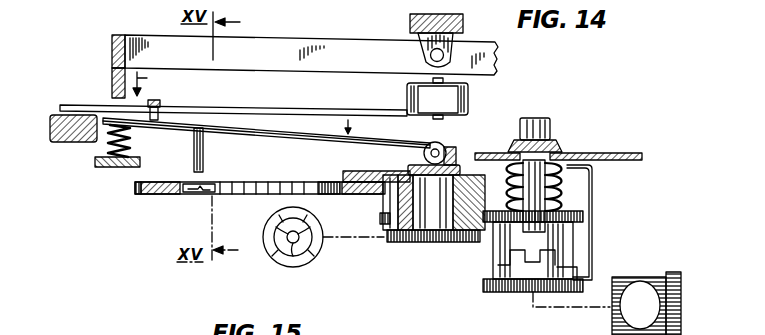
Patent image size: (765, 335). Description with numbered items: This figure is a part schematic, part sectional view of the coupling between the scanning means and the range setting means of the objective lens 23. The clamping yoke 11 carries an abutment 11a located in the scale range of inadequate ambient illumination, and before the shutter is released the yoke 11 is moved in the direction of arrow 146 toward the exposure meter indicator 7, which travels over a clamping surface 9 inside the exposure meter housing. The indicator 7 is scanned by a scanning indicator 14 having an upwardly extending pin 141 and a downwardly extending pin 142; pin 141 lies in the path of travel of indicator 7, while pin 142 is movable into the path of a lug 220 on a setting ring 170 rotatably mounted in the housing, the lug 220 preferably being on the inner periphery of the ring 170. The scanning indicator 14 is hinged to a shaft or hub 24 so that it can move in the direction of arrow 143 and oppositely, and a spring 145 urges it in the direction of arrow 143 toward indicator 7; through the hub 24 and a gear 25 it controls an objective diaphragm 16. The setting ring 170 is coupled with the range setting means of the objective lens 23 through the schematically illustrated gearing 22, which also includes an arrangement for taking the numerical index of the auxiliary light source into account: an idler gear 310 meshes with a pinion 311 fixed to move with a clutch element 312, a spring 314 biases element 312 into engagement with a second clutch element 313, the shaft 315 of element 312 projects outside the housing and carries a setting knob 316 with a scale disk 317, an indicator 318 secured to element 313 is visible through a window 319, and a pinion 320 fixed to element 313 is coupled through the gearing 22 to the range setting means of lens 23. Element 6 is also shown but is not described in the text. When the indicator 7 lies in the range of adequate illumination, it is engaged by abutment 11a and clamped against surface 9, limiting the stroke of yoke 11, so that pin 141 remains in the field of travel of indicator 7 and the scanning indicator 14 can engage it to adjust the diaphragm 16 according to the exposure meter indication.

The clamping yoke 11 is at (112, 46).
The abutment 11a is at (112, 82).
The arrow 146 is at (147, 78).
The pin 141 is at (162, 102).
The exposure meter indicator 7 is at (285, 110).
The clamping surface 9 is at (52, 120).
The spring 145 is at (132, 146).
The pin 142 is at (204, 156).
The scanning indicator 14 is at (300, 134).
The arrow 143 is at (352, 131).
The carriage 6 is at (468, 98).
The setting ring 170 is at (138, 196).
The lug 220 is at (191, 196).
The objective diaphragm 16 is at (268, 250).
The idler gear 310 is at (412, 221).
The shaft or hub 24 is at (413, 226).
The gear 25 is at (427, 220).
The setting knob 316 is at (530, 118).
The scale disk 317 is at (550, 149).
The window 319 is at (585, 155).
The indicator 318 is at (592, 172).
The spring 314 is at (552, 180).
The shaft 315 is at (560, 201).
The pinion 311 is at (583, 216).
The clutch element 312 is at (550, 250).
The clutch element 313 is at (503, 268).
The pinion 320 is at (507, 292).
The gearing 22 is at (570, 313).
The objective lens 23 is at (643, 278).